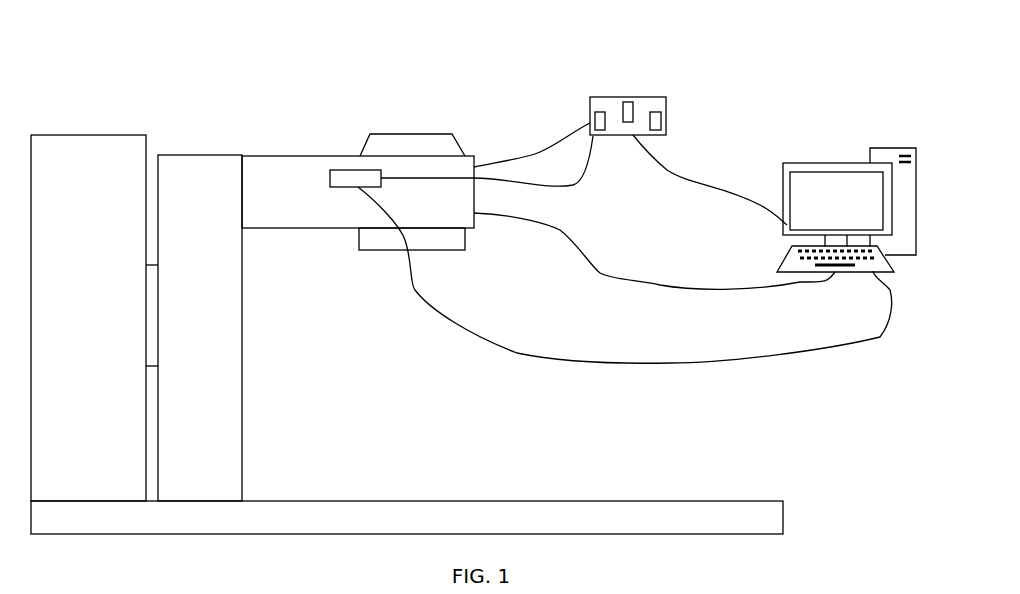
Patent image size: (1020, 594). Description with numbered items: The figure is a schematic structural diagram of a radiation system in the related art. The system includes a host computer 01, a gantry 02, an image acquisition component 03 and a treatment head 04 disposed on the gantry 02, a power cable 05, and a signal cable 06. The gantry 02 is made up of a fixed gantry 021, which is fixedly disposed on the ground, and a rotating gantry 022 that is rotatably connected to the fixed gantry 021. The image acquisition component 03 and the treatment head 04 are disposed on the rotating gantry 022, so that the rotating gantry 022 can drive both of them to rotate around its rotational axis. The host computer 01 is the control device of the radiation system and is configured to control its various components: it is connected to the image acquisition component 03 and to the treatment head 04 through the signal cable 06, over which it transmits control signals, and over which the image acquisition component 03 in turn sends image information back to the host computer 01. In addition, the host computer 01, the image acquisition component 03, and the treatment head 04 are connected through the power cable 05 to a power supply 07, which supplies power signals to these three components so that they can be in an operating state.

The host computer 01 is at (905, 148).
The gantry 02 is at (112, 53).
The fixed gantry 021 is at (115, 167).
The rotating gantry 022 is at (201, 169).
The image acquisition component 03 is at (340, 170).
The treatment head 04 is at (446, 134).
The power cable 05 is at (562, 150).
The signal cable 06 is at (572, 241).
The power supply 07 is at (632, 97).